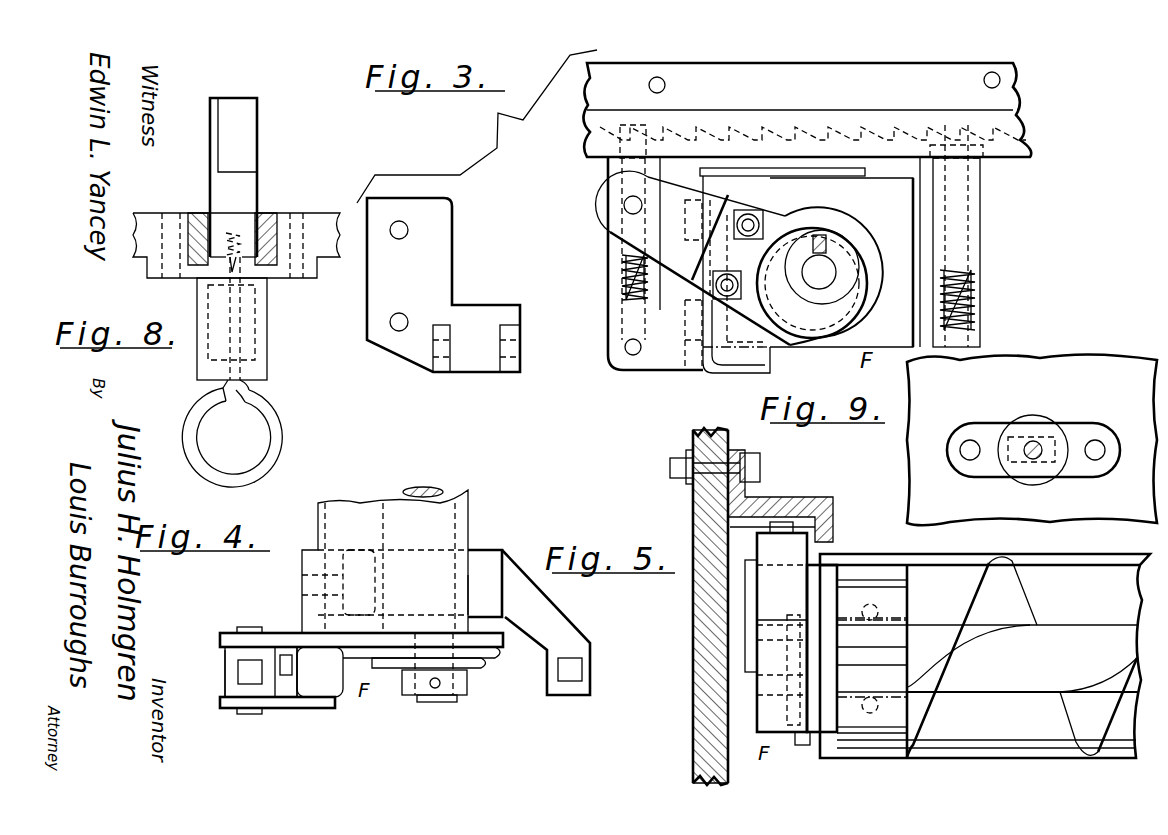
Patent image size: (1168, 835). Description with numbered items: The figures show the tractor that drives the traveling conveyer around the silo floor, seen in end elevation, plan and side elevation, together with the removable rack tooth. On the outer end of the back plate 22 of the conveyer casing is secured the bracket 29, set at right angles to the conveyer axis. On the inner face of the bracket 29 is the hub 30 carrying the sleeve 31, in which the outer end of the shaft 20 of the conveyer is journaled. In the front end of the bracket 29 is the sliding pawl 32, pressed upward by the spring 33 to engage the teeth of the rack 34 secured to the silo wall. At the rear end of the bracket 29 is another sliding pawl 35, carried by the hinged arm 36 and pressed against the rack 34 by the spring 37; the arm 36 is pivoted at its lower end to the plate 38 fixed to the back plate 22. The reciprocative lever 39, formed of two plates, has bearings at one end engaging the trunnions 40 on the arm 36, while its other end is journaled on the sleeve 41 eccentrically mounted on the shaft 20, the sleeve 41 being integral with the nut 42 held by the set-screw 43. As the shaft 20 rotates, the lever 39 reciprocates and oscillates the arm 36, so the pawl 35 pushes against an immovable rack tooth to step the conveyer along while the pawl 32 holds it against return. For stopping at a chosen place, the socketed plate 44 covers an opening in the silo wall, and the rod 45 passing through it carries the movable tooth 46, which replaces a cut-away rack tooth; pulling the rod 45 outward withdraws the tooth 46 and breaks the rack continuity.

In FIG. 3, the shaft 20 is at (826, 268).
In FIG. 4, the shaft 20 is at (440, 493).
In FIG. 5, the shaft 20 is at (750, 675).
In FIG. 3, the back plate 22 is at (720, 365).
In FIG. 4, the back plate 22 is at (345, 508).
In FIG. 3, the bracket 29 is at (811, 252).
In FIG. 4, the bracket 29 is at (517, 568).
In FIG. 5, the bracket 29 is at (880, 742).
In FIG. 4, the hub 30 is at (487, 545).
In FIG. 5, the hub 30 is at (893, 640).
In FIG. 4, the sleeve 31 is at (470, 578).
In FIG. 5, the sleeve 31 is at (897, 608).
In FIG. 3, the sliding pawl 32 is at (948, 145).
In FIG. 4, the sliding pawl 32 is at (570, 682).
In FIG. 5, the sliding pawl 32 is at (782, 520).
In FIG. 3, the spring 33 is at (968, 302).
In FIG. 3, the rack 34 is at (1013, 86).
In FIG. 5, the rack 34 is at (833, 502).
In FIG. 3, the sliding pawl 35 is at (632, 130).
In FIG. 4, the sliding pawl 35 is at (238, 670).
In FIG. 3, the hinged arm 36 is at (612, 276).
In FIG. 4, the hinged arm 36 is at (225, 688).
In FIG. 3, the spring 37 is at (622, 288).
In FIG. 3, the plate 38 is at (440, 278).
In FIG. 4, the plate 38 is at (288, 700).
In FIG. 3, the reciprocative lever 39 is at (626, 228).
In FIG. 4, the reciprocative lever 39 is at (330, 700).
In FIG. 3, the trunnions 40 is at (623, 205).
In FIG. 4, the trunnions 40 is at (248, 628).
In FIG. 4, the sleeve 41 is at (483, 658).
In FIG. 5, the sleeve 41 is at (805, 632).
In FIG. 3, the nut 42 is at (812, 283).
In FIG. 4, the nut 42 is at (470, 660).
In FIG. 5, the nut 42 is at (790, 735).
In FIG. 3, the set-screw 43 is at (820, 235).
In FIG. 4, the set-screw 43 is at (436, 702).
In FIG. 9, the socketed plate 44 is at (1092, 432).
In FIG. 8, the socketed plate 44 is at (147, 270).
In FIG. 9, the rod 45 is at (1030, 458).
In FIG. 8, the rod 45 is at (236, 262).
In FIG. 9, the tooth 46 is at (1045, 465).
In FIG. 8, the tooth 46 is at (246, 148).